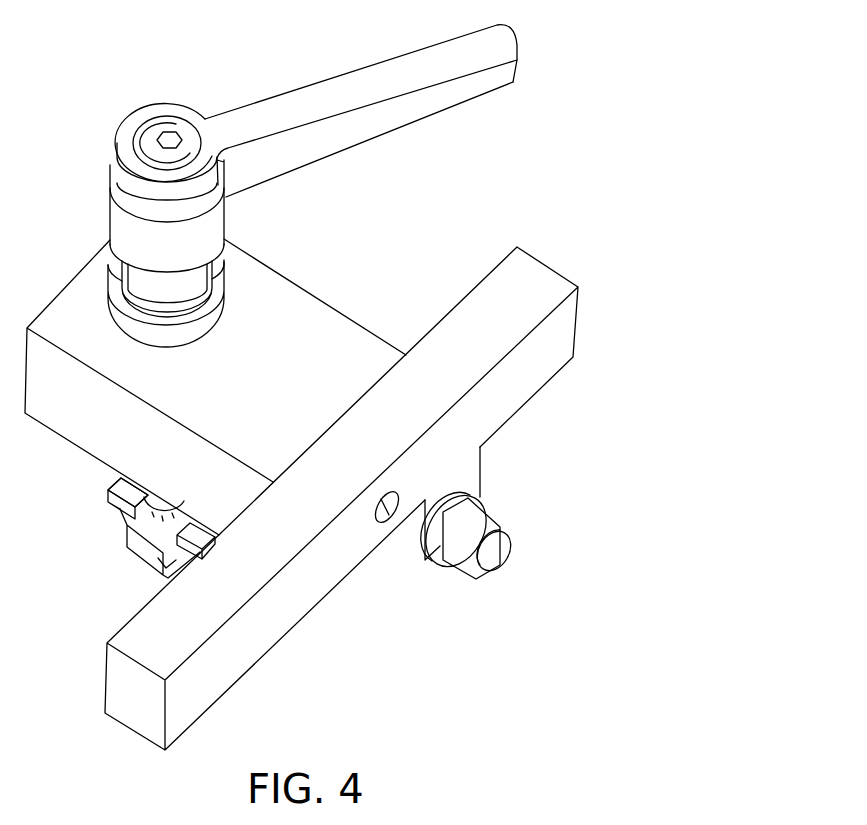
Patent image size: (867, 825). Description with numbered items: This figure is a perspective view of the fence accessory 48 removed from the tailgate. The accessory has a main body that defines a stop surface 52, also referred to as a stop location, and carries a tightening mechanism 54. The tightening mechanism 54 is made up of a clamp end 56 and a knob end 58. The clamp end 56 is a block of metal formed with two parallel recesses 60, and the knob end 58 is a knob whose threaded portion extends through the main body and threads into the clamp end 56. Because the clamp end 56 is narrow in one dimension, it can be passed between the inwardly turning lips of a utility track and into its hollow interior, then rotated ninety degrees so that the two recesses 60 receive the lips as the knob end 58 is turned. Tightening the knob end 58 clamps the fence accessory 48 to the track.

The fence accessory 48 is at (271, 274).
The stop surface 52 is at (273, 612).
The tightening mechanism 54 is at (100, 209).
The clamp end 56 is at (144, 506).
The knob end 58 is at (401, 77).
The recesses 60 is at (131, 489).